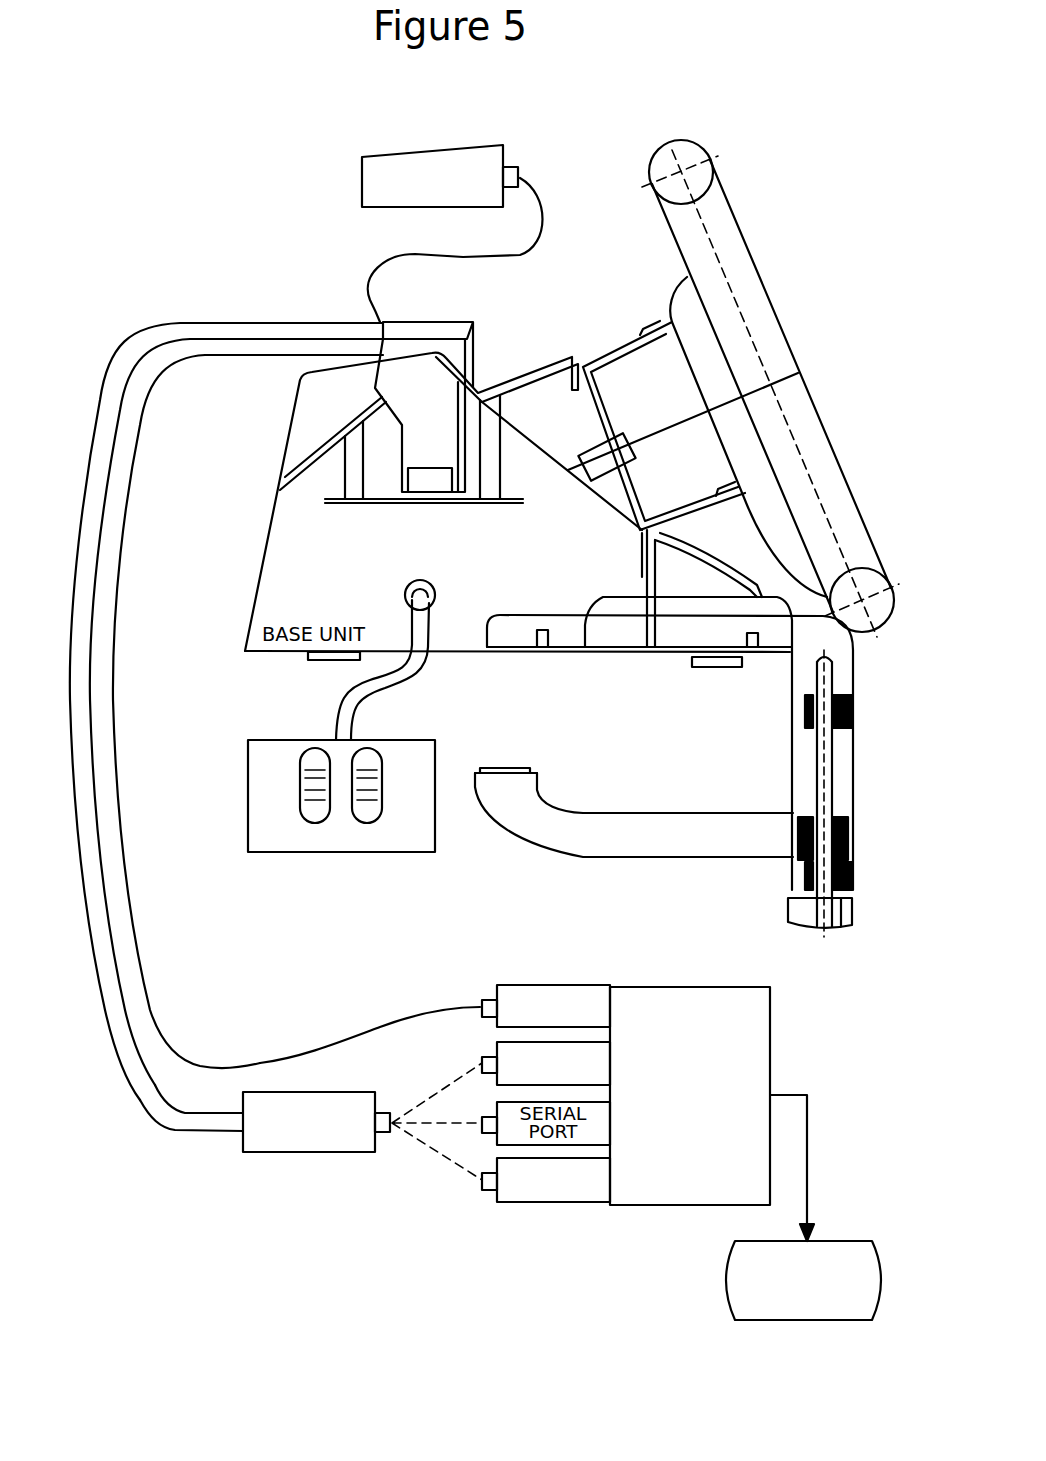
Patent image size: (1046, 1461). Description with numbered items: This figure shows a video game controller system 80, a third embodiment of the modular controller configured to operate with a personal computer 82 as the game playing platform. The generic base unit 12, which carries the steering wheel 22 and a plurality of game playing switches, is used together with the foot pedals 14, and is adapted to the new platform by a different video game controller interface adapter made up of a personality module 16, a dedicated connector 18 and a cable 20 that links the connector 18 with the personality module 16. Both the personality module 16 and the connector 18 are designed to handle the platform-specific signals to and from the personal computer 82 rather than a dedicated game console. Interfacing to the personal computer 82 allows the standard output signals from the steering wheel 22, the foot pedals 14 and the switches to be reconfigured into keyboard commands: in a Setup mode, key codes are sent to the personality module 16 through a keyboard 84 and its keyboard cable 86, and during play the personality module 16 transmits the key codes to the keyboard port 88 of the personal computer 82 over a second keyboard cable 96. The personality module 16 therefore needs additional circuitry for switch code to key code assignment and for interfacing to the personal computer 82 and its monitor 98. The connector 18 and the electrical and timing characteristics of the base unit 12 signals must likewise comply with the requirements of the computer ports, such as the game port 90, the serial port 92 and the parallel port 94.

The base unit 12 is at (300, 380).
The foot pedals 14 is at (435, 757).
The personality module 16 is at (485, 353).
The connector 18 is at (318, 1152).
The cable 20 is at (162, 1130).
The steering wheel 22 is at (793, 353).
The video game controller system 80 is at (551, 1314).
The personal computer 82 is at (770, 1062).
The keyboard 84 is at (377, 157).
The keyboard cable 86 is at (520, 180).
The keyboard port 88 is at (525, 987).
The game port 90 is at (480, 1007).
The serial port 92 is at (480, 1060).
The parallel port 94 is at (553, 1205).
The second keyboard cable 96 is at (187, 1060).
The monitor 98 is at (822, 1240).